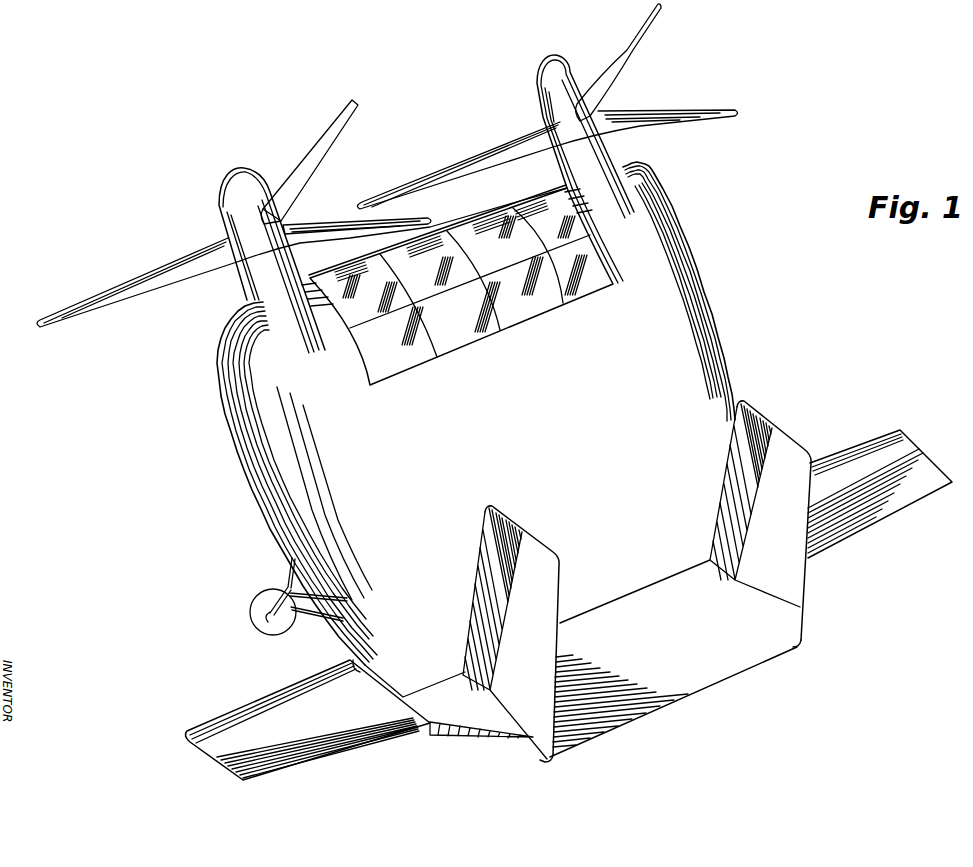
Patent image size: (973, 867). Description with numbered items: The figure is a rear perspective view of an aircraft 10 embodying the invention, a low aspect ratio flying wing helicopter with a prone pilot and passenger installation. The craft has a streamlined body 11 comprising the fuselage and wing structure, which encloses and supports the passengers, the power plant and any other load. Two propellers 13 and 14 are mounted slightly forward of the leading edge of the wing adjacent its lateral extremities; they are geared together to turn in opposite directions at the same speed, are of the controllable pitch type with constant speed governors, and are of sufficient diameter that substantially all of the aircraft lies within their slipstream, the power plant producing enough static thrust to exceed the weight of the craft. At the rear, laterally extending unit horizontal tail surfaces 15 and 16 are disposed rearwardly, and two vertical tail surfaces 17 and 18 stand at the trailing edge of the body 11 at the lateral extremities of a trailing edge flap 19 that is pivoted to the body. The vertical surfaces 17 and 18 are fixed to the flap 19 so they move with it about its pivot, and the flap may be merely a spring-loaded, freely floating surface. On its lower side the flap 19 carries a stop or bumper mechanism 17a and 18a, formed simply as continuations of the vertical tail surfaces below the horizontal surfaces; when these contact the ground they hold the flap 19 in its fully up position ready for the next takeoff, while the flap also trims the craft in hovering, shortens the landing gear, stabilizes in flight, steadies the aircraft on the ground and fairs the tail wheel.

The aircraft 10 is at (703, 257).
The streamlined body 11 is at (693, 320).
The propeller 13 is at (301, 168).
The propeller 14 is at (640, 40).
The horizontal tail surface 15 is at (210, 722).
The horizontal tail surface 16 is at (880, 440).
The vertical tail surface 17 is at (500, 512).
The stop or bumper mechanism 17a is at (535, 750).
The vertical tail surface 18 is at (753, 408).
The stop or bumper mechanism 18a is at (800, 648).
The trailing edge flap 19 is at (709, 688).